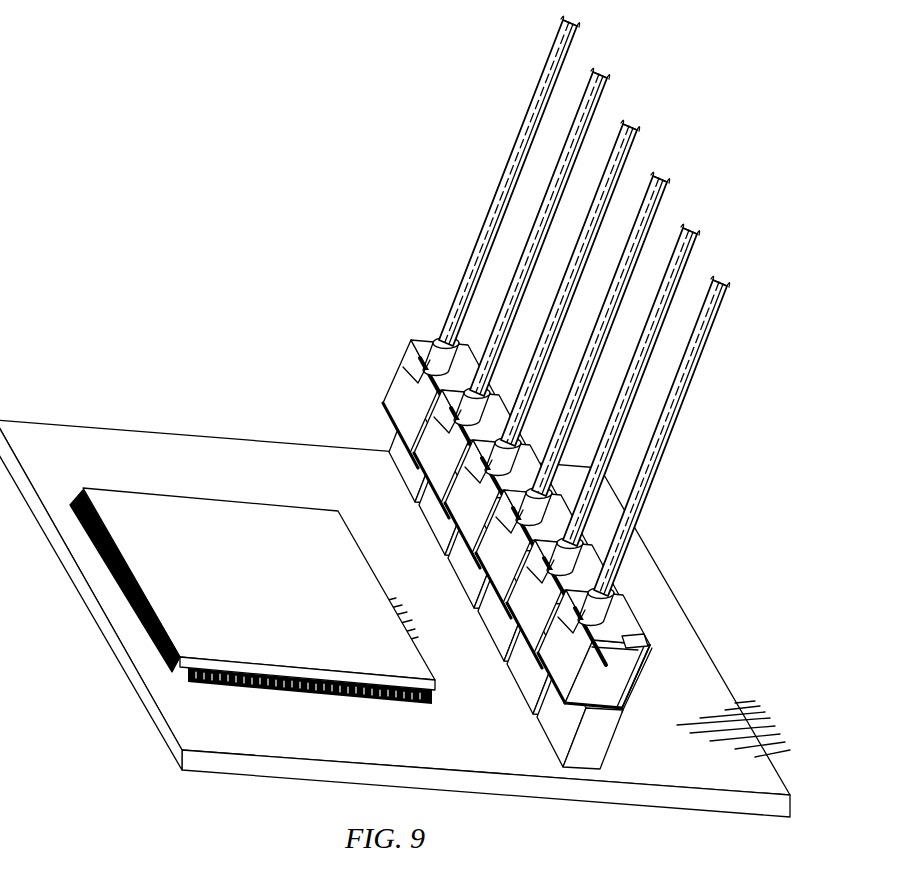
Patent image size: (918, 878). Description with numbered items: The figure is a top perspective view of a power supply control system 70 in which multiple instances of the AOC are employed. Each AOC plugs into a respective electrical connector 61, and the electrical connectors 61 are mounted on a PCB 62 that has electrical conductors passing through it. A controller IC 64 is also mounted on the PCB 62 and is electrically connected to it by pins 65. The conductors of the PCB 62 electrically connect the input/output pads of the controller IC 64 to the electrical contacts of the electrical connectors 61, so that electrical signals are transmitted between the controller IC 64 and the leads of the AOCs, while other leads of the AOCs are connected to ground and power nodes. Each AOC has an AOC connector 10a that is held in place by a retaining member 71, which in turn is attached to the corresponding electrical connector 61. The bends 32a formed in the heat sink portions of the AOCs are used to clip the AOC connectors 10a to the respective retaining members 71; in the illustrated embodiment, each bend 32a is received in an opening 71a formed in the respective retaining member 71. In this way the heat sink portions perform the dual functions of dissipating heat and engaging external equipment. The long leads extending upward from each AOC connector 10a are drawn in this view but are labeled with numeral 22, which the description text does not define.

The power supply control system 70 is at (395, 416).
The cable lead 22 is at (507, 170).
The AOC connector 10a is at (397, 398).
The electrical connector 61 is at (403, 460).
The PCB 62 is at (663, 610).
The controller IC 64 is at (205, 507).
The pins 65 is at (262, 700).
The bend 32a is at (628, 615).
The retaining member 71 is at (640, 672).
The opening 71a is at (640, 640).